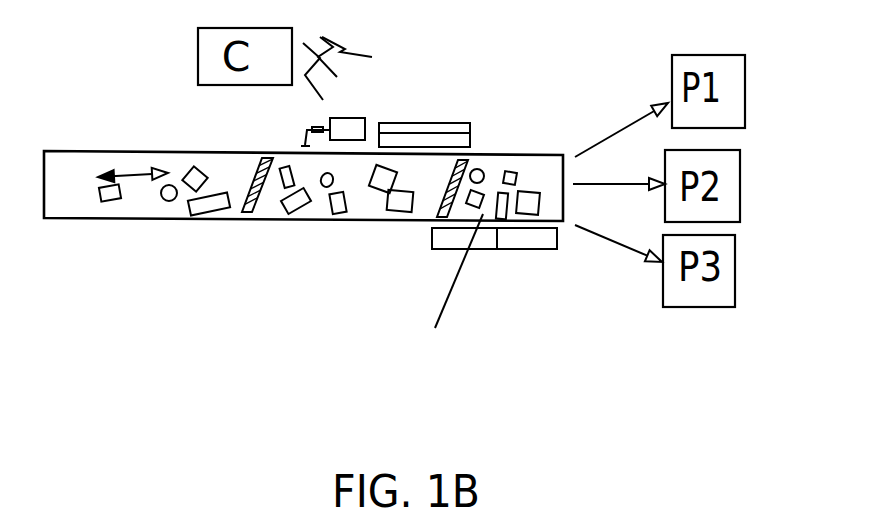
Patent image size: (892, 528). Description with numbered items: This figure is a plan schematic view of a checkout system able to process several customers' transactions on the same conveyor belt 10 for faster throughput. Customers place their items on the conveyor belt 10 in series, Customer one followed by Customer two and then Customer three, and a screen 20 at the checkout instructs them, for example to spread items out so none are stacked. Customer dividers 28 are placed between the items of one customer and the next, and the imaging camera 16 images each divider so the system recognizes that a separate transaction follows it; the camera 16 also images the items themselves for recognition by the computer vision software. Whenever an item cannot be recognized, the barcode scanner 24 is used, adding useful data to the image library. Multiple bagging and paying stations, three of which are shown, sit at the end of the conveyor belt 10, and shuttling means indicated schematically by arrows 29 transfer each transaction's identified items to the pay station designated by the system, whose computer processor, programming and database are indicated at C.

The conveyor belt 10 is at (76, 160).
The imaging camera 16 is at (347, 118).
The screen 20 is at (413, 123).
The barcode scanner 24 is at (532, 242).
The customer dividers 28 is at (270, 212).
The arrows 29 is at (623, 130).